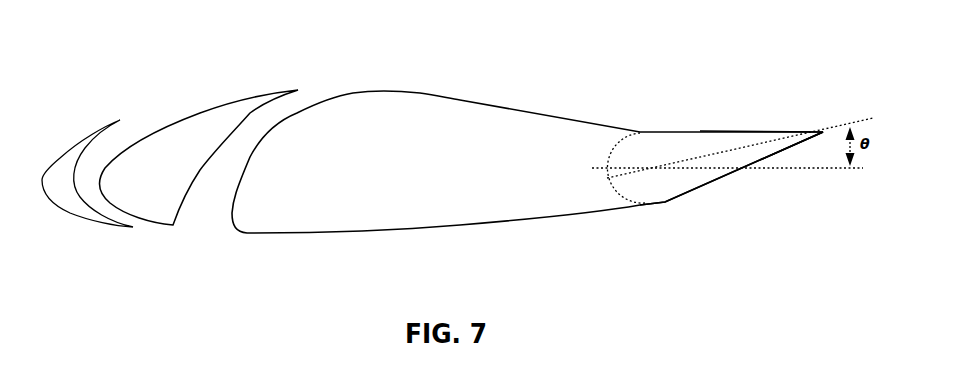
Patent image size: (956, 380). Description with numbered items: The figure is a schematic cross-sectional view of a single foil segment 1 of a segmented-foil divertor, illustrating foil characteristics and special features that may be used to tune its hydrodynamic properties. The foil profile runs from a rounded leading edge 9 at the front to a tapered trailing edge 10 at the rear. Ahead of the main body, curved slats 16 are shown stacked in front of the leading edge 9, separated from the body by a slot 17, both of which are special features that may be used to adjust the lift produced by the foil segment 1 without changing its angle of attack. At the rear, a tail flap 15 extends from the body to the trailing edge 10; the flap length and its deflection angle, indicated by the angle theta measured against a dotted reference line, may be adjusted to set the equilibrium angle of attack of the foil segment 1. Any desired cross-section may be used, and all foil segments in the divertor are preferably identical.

The foil segment 1 is at (592, 92).
The leading edge 9 is at (42, 178).
The trailing edge 10 is at (823, 132).
The flap 15 is at (749, 195).
The slat 16 is at (150, 98).
The slot 17 is at (222, 248).